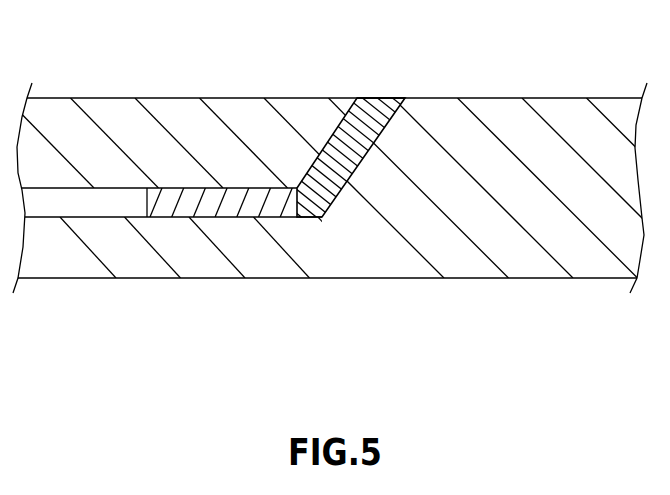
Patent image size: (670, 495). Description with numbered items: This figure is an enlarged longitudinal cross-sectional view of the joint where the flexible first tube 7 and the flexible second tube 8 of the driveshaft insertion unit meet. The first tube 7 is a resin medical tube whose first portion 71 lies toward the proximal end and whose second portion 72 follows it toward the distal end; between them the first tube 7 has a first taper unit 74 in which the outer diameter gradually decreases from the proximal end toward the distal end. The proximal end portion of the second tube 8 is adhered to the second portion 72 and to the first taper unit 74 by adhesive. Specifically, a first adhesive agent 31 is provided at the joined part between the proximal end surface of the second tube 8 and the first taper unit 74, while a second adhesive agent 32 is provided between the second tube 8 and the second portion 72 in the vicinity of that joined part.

The first tube 7 is at (555, 165).
The second tube 8 is at (60, 133).
The first adhesive agent 31 is at (340, 153).
The second adhesive agent 32 is at (214, 205).
The first portion 71 is at (478, 163).
The second portion 72 is at (113, 252).
The first taper unit 74 is at (380, 122).